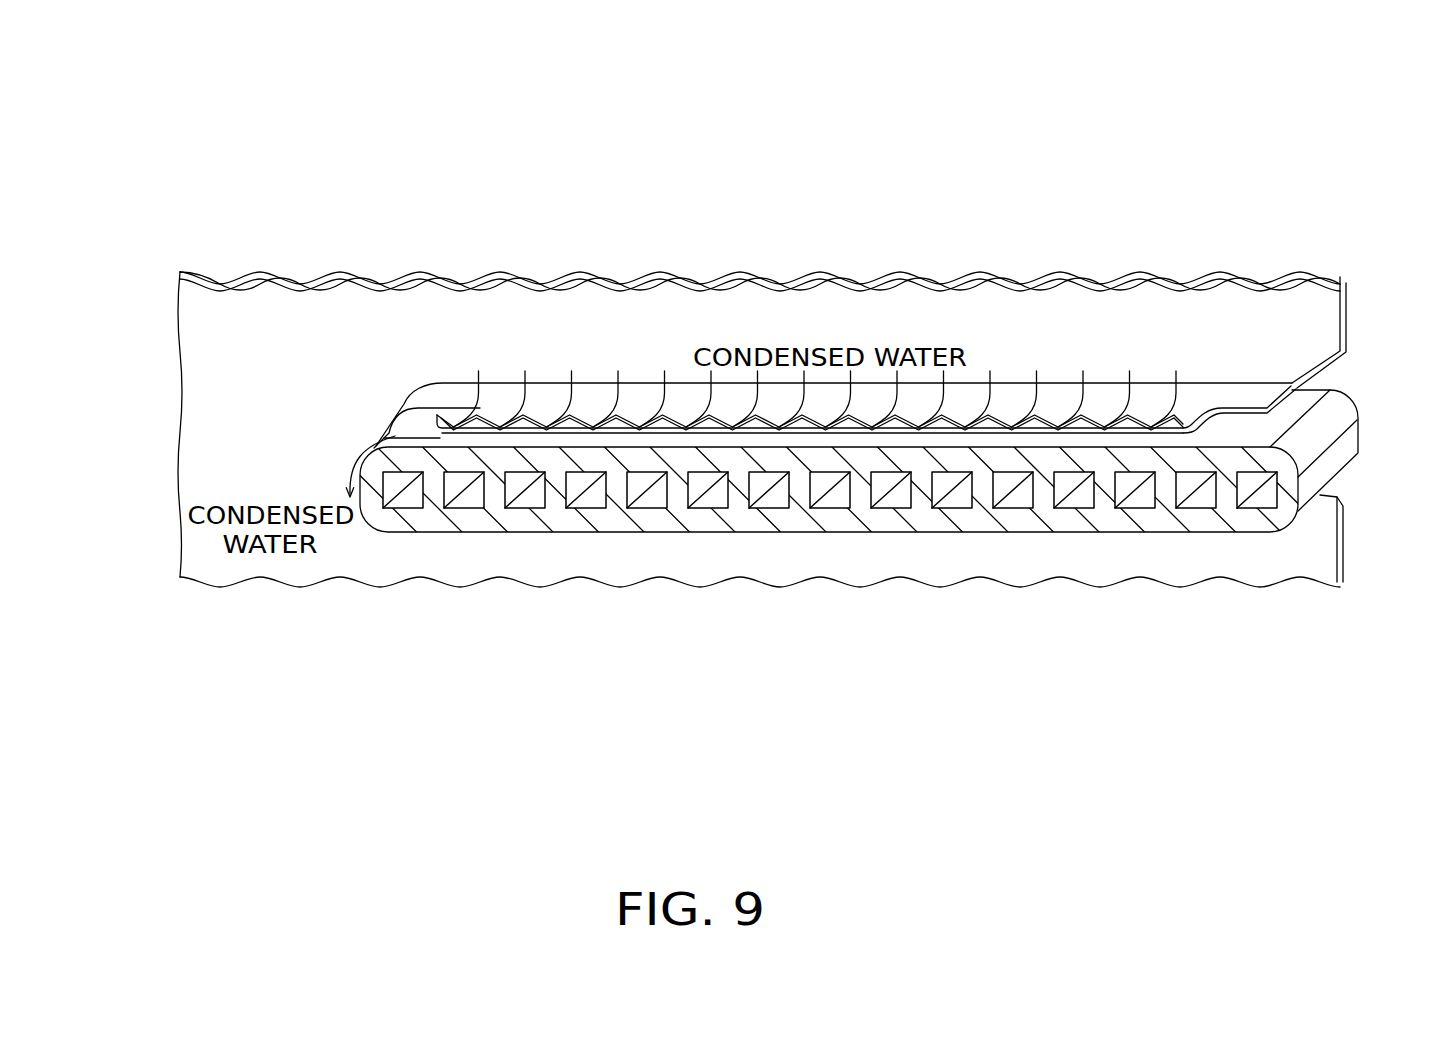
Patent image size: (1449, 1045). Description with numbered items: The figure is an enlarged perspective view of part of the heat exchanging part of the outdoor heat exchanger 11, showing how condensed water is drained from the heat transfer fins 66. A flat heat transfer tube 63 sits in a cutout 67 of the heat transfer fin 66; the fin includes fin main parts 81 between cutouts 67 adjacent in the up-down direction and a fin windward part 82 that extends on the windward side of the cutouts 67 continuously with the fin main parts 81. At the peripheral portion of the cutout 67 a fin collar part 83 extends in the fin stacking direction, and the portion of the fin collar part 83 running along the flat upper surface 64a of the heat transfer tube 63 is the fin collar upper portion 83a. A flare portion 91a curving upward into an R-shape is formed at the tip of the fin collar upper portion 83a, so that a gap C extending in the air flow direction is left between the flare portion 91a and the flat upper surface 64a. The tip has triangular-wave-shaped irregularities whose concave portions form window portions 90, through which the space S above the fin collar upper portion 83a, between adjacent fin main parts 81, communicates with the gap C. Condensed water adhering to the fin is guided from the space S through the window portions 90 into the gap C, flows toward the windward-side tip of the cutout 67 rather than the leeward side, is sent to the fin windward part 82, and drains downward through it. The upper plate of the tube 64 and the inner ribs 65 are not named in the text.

The outdoor heat exchanger 11 is at (167, 148).
The heat transfer fin 66 is at (318, 273).
The space S is at (962, 296).
The flare portion 91a is at (483, 420).
The flat upper surface 64a is at (1245, 431).
The upper plate 64 is at (833, 415).
The fin main part 81 is at (1288, 332).
The fin windward part 82 is at (268, 420).
The cutout 67 is at (1338, 497).
The heat transfer tube 63 is at (430, 534).
The gap C is at (573, 440).
The window portion 90 is at (688, 430).
The rib 65 is at (1072, 504).
The fin collar upper portion 83a is at (1205, 425).
The fin collar part 83 is at (810, 424).